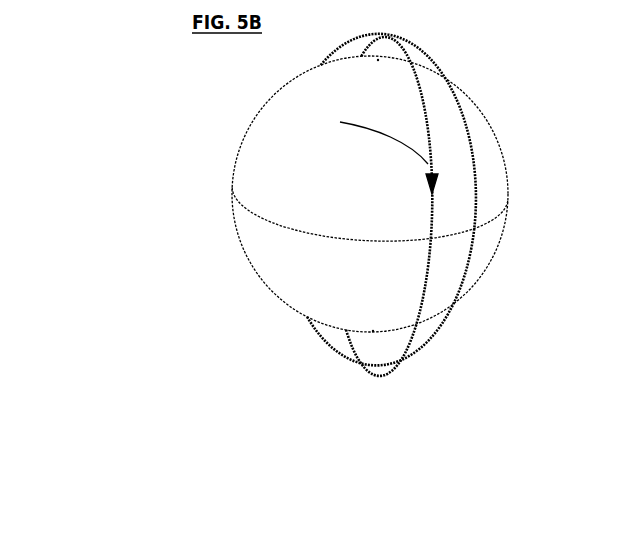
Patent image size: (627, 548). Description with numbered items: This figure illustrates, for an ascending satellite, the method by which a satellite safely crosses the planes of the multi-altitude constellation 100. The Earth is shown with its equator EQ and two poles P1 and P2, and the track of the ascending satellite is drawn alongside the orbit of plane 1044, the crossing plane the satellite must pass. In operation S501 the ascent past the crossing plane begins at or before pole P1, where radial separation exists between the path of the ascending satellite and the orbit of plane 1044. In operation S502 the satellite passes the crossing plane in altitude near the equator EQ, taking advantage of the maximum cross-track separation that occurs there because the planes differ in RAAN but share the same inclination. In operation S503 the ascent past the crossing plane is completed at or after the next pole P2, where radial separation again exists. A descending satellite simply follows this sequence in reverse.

The constellation 100 is at (358, 180).
The plane 1044 is at (471, 161).
The operation S501 is at (408, 56).
The operation S502 is at (441, 240).
The operation S503 is at (406, 373).
The pole P1 is at (383, 59).
The pole P2 is at (373, 331).
The equator EQ is at (498, 203).